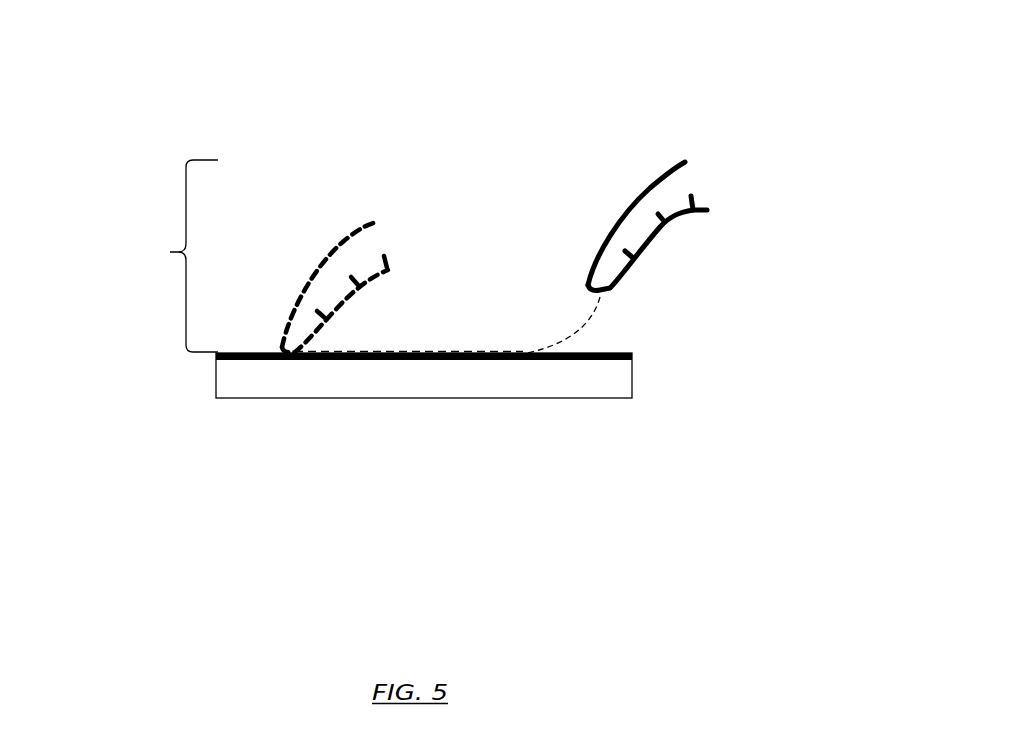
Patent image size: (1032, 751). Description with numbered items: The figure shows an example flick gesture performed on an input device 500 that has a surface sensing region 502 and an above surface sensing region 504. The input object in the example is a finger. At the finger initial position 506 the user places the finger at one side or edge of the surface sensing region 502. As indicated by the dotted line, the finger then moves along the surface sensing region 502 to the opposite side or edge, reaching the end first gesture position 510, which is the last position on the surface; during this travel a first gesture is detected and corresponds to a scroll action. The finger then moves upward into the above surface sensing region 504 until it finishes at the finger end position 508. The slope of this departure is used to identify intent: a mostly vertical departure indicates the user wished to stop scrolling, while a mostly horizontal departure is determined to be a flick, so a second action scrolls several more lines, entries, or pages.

The input device 500 is at (378, 388).
The surface sensing region 502 is at (633, 353).
The above surface sensing region 504 is at (154, 263).
The finger initial position 506 is at (345, 224).
The finger end position 508 is at (646, 165).
The end first gesture position 510 is at (524, 350).